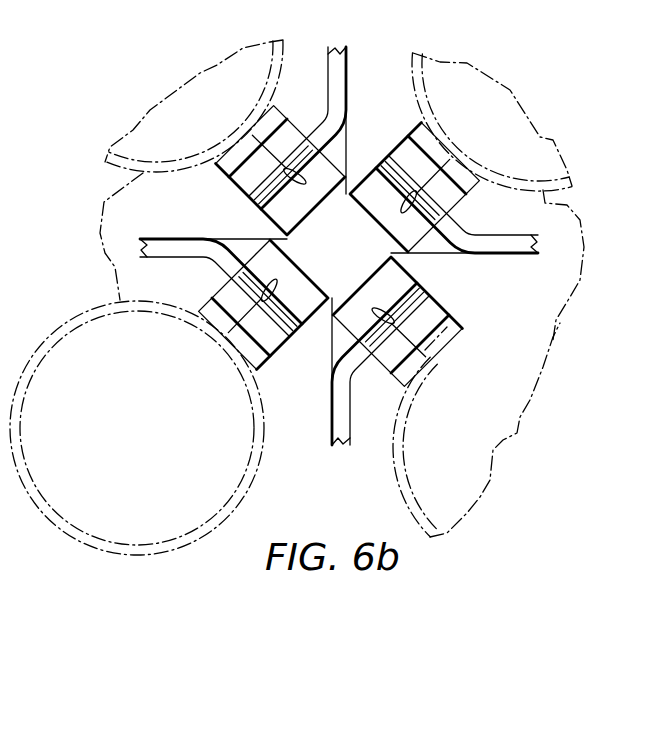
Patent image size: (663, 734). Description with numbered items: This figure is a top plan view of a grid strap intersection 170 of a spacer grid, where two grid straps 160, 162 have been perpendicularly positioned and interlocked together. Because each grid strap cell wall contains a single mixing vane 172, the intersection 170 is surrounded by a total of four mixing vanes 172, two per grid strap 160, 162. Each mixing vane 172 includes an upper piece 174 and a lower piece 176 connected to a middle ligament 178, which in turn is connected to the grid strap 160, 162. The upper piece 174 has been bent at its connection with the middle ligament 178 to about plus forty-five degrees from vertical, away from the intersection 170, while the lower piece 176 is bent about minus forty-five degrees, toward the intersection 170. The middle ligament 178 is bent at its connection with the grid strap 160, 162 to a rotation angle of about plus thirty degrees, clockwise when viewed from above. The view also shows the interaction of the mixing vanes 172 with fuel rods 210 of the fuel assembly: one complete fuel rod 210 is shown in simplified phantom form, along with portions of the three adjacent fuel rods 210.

The grid strap 160 is at (160, 251).
The grid strap 162 is at (329, 107).
The grid strap intersection 170 is at (347, 248).
The mixing vane 172 is at (240, 136).
The upper piece 174 is at (247, 182).
The lower piece 176 is at (323, 205).
The middle ligament 178 is at (346, 176).
The fuel rod 210 is at (344, 288).